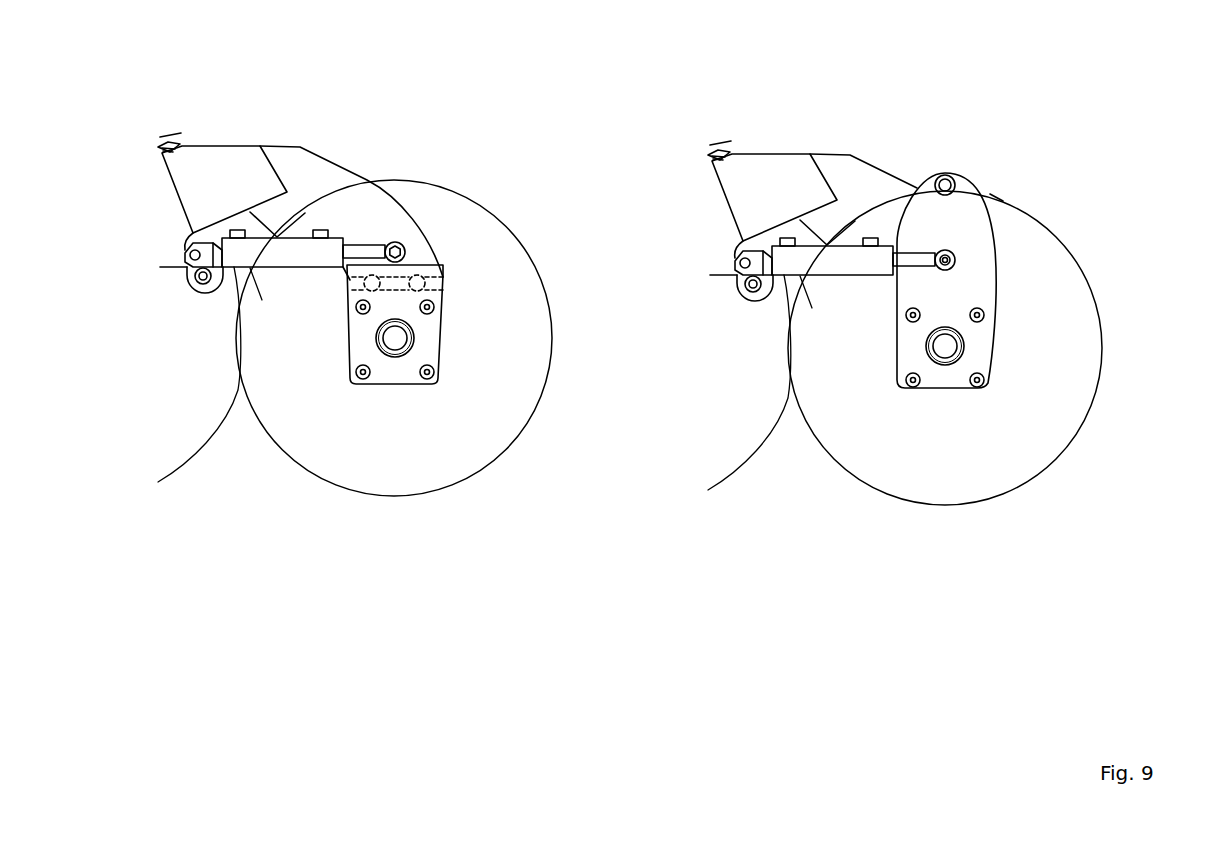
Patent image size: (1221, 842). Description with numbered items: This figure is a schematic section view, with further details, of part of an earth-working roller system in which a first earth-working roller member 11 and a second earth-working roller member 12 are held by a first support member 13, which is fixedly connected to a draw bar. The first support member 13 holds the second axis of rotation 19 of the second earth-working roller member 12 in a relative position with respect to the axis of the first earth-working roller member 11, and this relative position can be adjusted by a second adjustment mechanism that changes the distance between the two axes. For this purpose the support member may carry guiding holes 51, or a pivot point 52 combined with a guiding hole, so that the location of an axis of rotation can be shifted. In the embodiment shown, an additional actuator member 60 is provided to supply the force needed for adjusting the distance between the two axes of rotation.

The first earth-working roller member 11 is at (725, 448).
The second earth-working roller member 12 is at (287, 433).
The first support member 13 is at (233, 158).
The second axis of rotation 19 is at (397, 343).
The guiding hole 51 is at (442, 280).
The pivot point 52 is at (948, 178).
The actuator member 60 is at (297, 252).